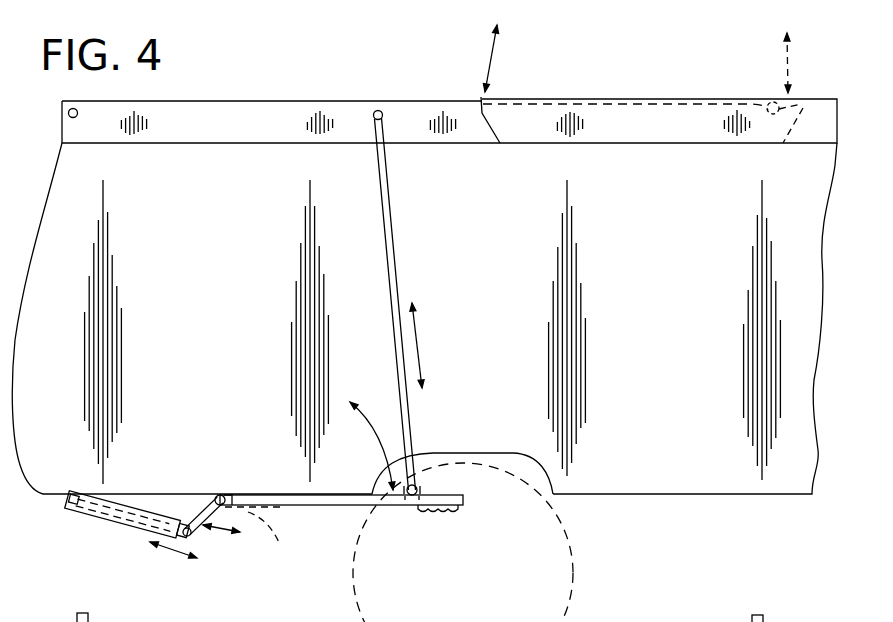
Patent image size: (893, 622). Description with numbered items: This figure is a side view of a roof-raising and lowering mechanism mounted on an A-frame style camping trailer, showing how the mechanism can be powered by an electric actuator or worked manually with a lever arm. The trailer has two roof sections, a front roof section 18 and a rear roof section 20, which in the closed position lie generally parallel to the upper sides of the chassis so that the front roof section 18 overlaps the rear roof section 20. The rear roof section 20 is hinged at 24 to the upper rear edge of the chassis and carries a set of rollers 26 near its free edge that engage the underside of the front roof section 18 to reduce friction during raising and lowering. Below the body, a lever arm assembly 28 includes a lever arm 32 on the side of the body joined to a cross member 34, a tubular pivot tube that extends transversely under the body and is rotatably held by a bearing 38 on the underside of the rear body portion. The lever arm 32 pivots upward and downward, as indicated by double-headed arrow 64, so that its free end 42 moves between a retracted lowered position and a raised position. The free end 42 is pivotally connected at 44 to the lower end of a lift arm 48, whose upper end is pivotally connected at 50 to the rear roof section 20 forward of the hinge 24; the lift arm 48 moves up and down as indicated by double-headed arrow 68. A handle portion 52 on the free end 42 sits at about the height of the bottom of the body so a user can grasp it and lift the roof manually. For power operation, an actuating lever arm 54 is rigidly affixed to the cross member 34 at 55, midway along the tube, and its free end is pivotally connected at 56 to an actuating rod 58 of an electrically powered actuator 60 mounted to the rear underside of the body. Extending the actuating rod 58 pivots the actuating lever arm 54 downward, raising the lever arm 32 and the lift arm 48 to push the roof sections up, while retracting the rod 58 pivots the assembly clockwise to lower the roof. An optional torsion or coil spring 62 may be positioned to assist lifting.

The front roof section 18 is at (808, 96).
The rear roof section 20 is at (293, 100).
The hinge 24 is at (67, 113).
The rollers 26 is at (746, 101).
The lever arm assembly 28 is at (343, 512).
The lever arm 32 is at (313, 500).
The cross member 34 is at (213, 493).
The bearing 38 is at (208, 496).
The free end 42 is at (408, 500).
The pivotal connection 44 is at (421, 488).
The lift arm 48 is at (400, 291).
The pivotal connection 50 is at (382, 113).
The handle portion 52 is at (455, 509).
The actuating lever arm 54 is at (184, 522).
The rigid attachment point 55 is at (230, 503).
The pivotal connection 56 is at (195, 538).
The actuating rod 58 is at (165, 553).
The electrically powered actuator 60 is at (100, 518).
The torsion or coil spring 62 is at (258, 547).
The double-headed arrow 64 is at (370, 432).
The double-headed arrow 68 is at (418, 338).